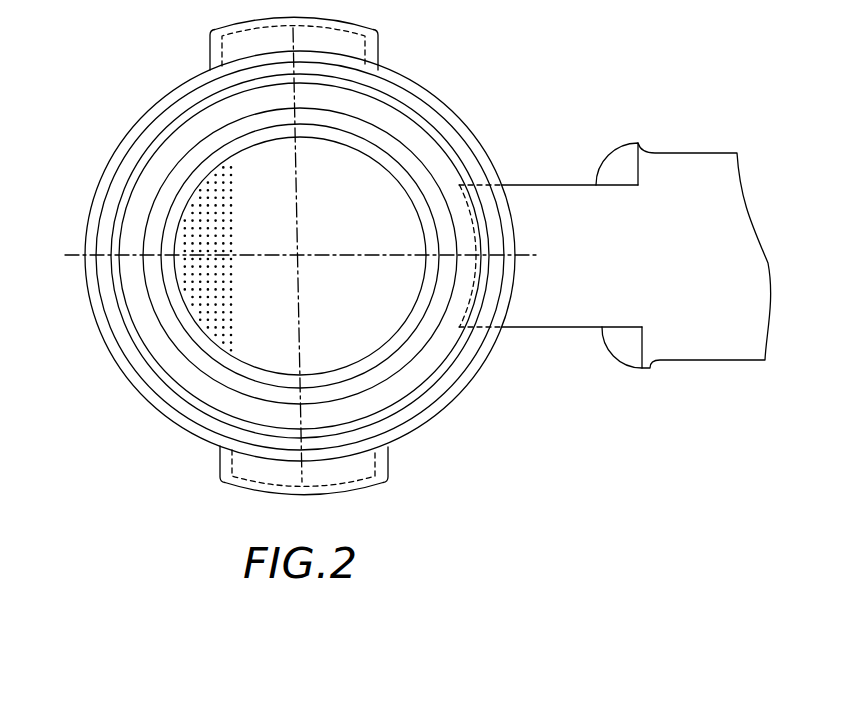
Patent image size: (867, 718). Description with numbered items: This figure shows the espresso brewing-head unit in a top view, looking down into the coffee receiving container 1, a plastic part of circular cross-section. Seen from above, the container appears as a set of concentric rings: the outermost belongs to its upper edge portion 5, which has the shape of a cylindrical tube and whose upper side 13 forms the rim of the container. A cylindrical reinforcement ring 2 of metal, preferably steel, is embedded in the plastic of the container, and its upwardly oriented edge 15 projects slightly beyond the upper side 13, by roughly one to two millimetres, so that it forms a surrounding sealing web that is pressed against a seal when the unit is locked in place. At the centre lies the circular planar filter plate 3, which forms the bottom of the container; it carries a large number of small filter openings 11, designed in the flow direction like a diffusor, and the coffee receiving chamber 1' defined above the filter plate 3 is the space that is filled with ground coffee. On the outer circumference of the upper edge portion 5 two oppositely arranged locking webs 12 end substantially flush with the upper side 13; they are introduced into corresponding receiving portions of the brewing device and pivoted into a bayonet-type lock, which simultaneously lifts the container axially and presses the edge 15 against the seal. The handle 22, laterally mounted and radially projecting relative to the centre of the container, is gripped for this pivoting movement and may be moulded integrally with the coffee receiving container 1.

The coffee receiving container 1 is at (338, 248).
The coffee receiving chamber 1' is at (336, 255).
The reinforcement ring 2 is at (148, 383).
The filter plate 3 is at (277, 345).
The upper edge portion 5 is at (116, 344).
The filter openings 11 is at (177, 270).
The locking webs 12 is at (380, 50).
The upper side 13 is at (128, 137).
The upwardly oriented edge 15 is at (112, 206).
The handle 22 is at (683, 173).